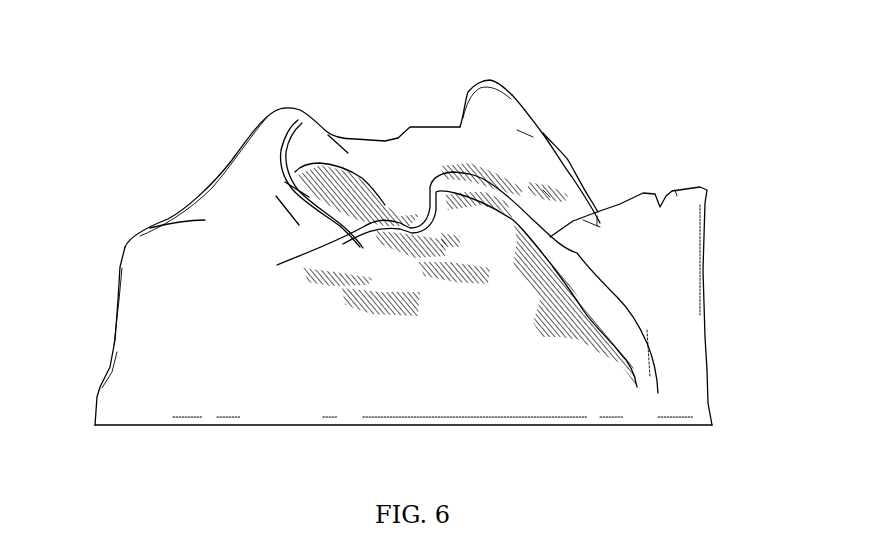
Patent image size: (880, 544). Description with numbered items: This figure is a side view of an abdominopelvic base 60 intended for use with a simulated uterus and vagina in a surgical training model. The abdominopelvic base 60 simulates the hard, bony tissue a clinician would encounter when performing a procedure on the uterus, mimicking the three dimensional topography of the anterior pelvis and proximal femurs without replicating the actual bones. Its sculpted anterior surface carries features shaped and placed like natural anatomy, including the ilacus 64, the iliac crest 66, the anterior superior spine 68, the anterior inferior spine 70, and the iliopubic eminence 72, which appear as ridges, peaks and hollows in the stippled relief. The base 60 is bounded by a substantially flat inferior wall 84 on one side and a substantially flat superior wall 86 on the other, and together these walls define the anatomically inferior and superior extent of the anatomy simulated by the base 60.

The abdominopelvic base 60 is at (409, 243).
The ilacus 64 is at (541, 130).
The iliac crest 66 is at (568, 159).
The anterior superior spine 68 is at (490, 80).
The anterior inferior spine 70 is at (411, 127).
The iliopubic eminence 72 is at (285, 107).
The inferior wall 84 is at (114, 314).
The superior wall 86 is at (708, 320).